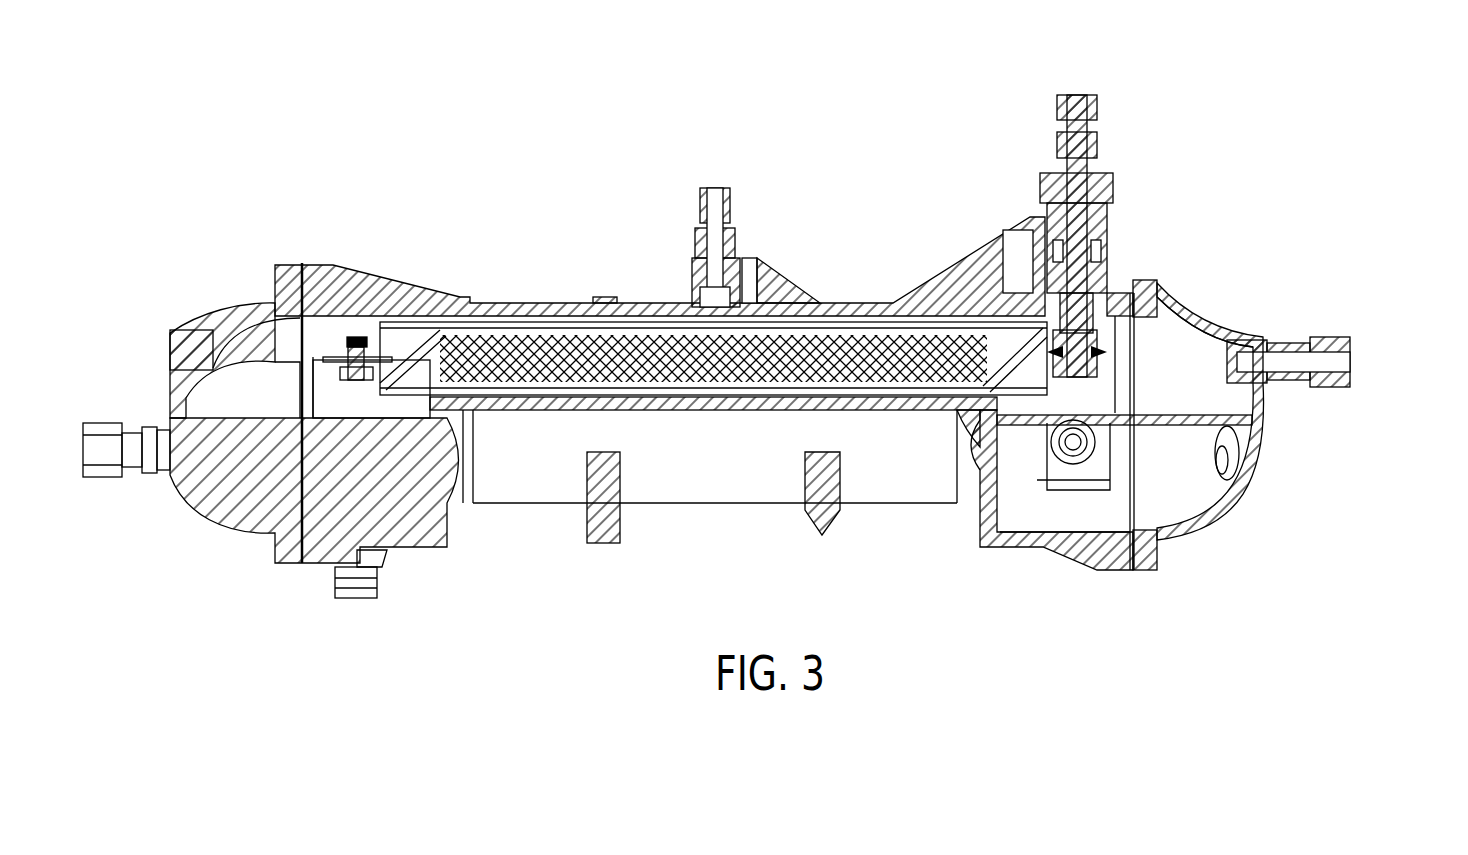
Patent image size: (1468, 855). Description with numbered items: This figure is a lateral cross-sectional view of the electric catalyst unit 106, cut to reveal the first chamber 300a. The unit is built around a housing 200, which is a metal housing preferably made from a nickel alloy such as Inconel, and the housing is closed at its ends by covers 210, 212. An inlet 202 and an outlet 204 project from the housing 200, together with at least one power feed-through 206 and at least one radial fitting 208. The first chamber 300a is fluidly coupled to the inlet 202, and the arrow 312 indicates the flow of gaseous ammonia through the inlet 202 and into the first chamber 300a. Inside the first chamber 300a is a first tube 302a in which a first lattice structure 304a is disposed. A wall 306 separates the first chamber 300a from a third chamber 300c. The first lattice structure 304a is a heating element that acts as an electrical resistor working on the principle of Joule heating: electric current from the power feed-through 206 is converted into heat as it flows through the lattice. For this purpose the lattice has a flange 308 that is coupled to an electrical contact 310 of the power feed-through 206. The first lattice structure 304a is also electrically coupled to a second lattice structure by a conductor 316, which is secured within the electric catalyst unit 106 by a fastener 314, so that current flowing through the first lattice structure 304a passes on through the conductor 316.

The electric catalyst unit 106 is at (840, 137).
The housing 200 is at (722, 500).
The inlet 202 is at (1313, 337).
The outlet 204 is at (113, 421).
The power feed-through 206 is at (1093, 100).
The radial fitting 208 is at (698, 197).
The cover 210 is at (1213, 518).
The cover 212 is at (223, 523).
The first chamber 300a is at (1181, 310).
The third chamber 300c is at (1110, 523).
The first tube 302a is at (583, 322).
The first lattice structure 304a is at (518, 333).
The wall 306 is at (1030, 414).
The flange 308 is at (1033, 340).
The electrical contact 310 is at (1082, 337).
The flow of gaseous ammonia 312 is at (1375, 358).
The fastener 314 is at (358, 337).
The conductor 316 is at (372, 341).